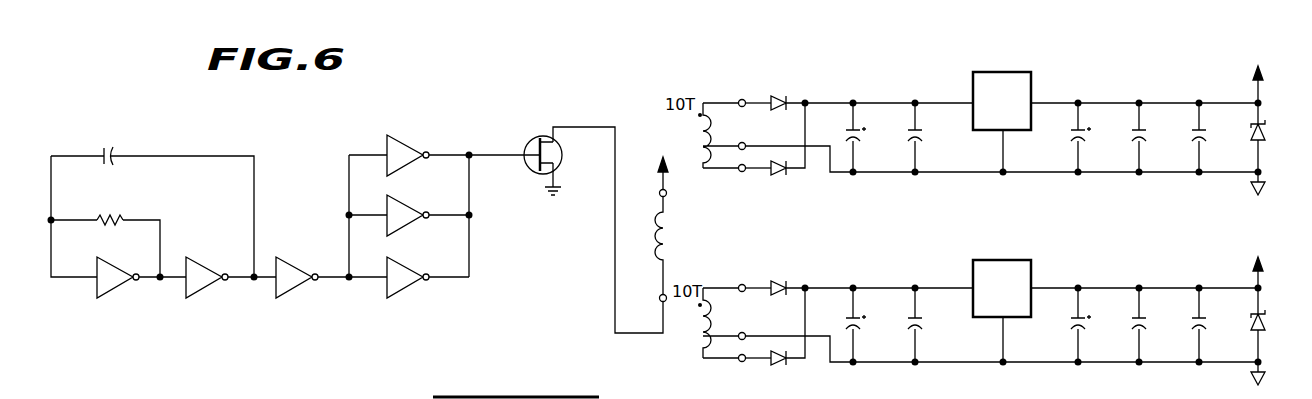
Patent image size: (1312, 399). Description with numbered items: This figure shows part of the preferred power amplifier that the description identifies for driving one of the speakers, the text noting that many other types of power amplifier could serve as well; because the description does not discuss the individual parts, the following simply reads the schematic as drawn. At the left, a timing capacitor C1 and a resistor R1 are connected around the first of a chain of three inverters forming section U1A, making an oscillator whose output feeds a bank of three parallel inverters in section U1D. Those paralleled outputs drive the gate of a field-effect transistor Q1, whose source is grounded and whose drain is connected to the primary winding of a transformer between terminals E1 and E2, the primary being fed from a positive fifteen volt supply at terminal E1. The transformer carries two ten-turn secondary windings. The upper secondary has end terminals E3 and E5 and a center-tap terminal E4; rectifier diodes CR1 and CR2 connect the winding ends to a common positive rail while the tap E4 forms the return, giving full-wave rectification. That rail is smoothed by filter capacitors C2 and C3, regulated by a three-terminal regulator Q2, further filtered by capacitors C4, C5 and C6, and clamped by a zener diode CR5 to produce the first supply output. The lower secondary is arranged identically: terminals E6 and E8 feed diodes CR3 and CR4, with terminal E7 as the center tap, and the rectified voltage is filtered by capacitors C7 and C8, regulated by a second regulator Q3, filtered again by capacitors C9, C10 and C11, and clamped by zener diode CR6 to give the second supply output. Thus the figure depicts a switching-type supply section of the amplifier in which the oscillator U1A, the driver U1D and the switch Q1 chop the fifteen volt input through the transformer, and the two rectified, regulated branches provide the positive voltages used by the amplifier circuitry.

The oscillator timing capacitor C1 is at (108, 149).
The oscillator timing resistor R1 is at (86, 209).
The inverter oscillator section U1A is at (207, 266).
The parallel inverter driver section U1D is at (409, 204).
The switching FET transistor Q1 is at (534, 136).
The transformer primary terminal E1 is at (656, 219).
The transformer primary terminal E2 is at (648, 299).
The secondary winding terminal E3 is at (751, 91).
The secondary winding center tap terminal E4 is at (792, 147).
The secondary winding terminal E5 is at (751, 181).
The secondary winding terminal E6 is at (751, 277).
The secondary winding center tap terminal E7 is at (792, 337).
The secondary winding terminal E8 is at (751, 372).
The rectifier diode CR1 is at (786, 92).
The rectifier diode CR2 is at (786, 156).
The rectifier diode CR3 is at (785, 277).
The rectifier diode CR4 is at (783, 343).
The zener protection diode CR5 is at (1275, 120).
The zener protection diode CR6 is at (1275, 310).
The filter capacitor C2 is at (868, 137).
The filter capacitor C3 is at (931, 137).
The filter capacitor C4 is at (1094, 137).
The filter capacitor C5 is at (1158, 137).
The filter capacitor C6 is at (1212, 137).
The filter capacitor C7 is at (868, 325).
The filter capacitor C8 is at (928, 325).
The filter capacitor C9 is at (1094, 325).
The filter capacitor C10 is at (1157, 325).
The filter capacitor C11 is at (1217, 325).
The 7812 voltage regulator Q2 is at (1003, 101).
The 7812 voltage regulator Q3 is at (1003, 288).